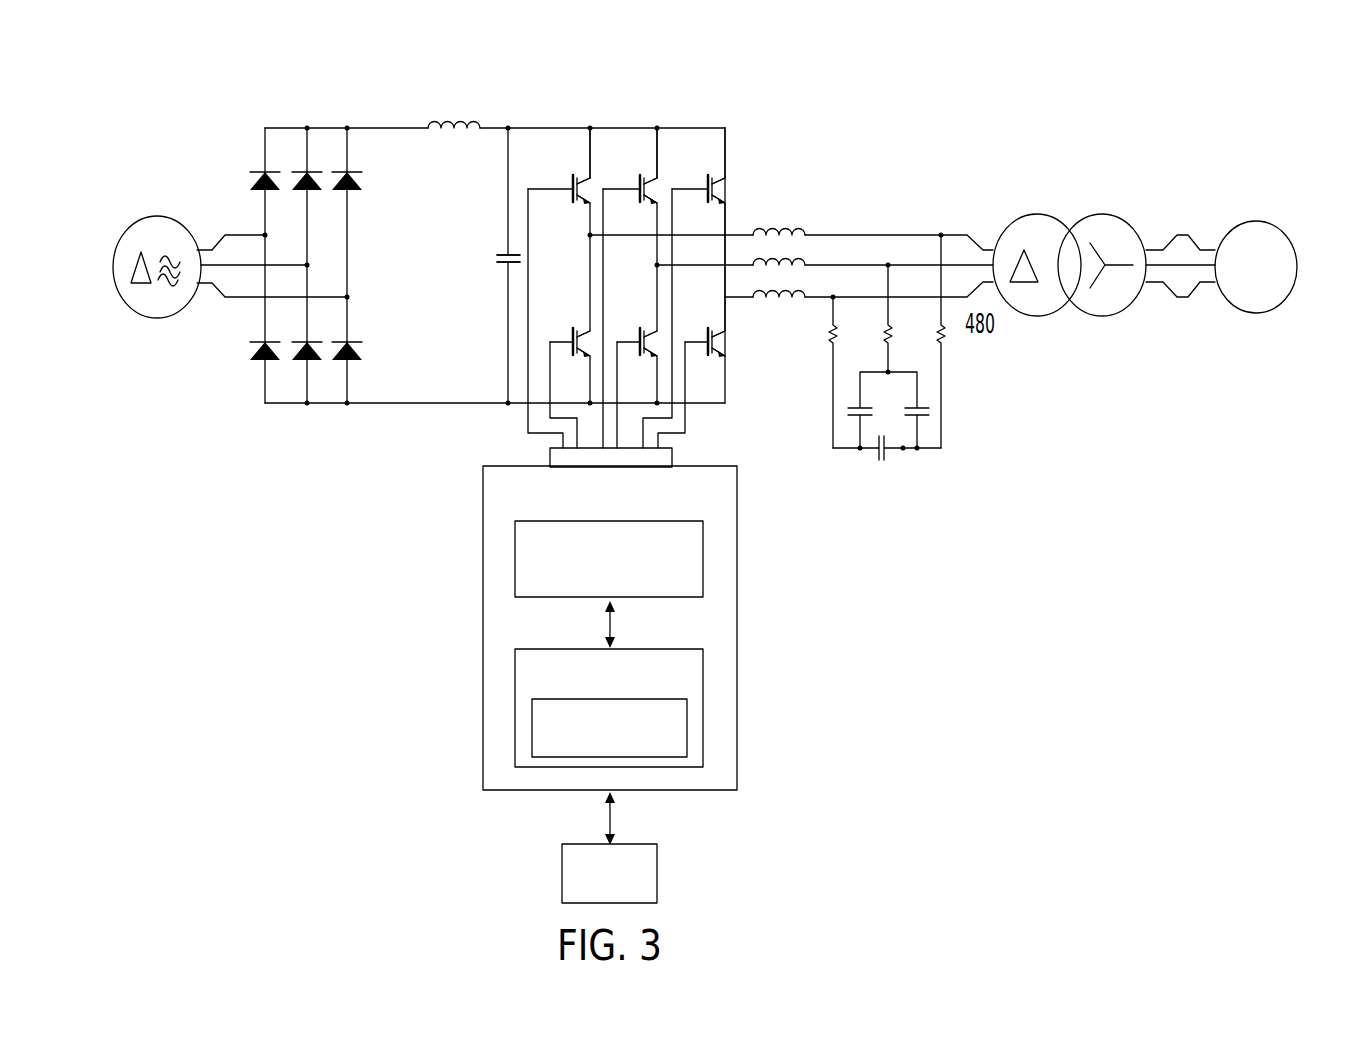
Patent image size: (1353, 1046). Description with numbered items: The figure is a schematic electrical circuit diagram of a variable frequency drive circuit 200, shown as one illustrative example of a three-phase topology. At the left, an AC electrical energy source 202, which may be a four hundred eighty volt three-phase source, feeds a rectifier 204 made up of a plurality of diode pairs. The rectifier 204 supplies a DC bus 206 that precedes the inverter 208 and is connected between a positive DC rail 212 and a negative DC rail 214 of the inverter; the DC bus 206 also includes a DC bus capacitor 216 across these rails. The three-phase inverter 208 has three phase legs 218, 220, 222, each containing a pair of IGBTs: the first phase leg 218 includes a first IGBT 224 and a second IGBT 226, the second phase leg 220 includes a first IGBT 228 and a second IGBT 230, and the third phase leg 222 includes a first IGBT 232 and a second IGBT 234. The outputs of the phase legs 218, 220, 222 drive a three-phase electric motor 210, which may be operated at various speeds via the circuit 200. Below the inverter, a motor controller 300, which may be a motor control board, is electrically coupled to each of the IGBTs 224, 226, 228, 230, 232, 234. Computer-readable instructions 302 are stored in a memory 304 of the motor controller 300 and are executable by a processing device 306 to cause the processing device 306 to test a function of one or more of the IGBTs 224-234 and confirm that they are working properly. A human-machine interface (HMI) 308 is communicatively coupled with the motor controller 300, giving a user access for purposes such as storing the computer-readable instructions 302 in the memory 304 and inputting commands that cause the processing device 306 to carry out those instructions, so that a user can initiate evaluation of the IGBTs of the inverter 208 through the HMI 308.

The variable frequency drive circuit 200 is at (214, 130).
The AC electrical energy source 202 is at (143, 222).
The rectifier 204 is at (248, 382).
The DC bus 206 is at (493, 307).
The inverter 208 is at (746, 123).
The electric motor 210 is at (1252, 222).
The positive DC rail 212 is at (385, 128).
The negative DC rail 214 is at (425, 404).
The DC bus capacitor 216 is at (503, 250).
The first phase leg 218 is at (587, 143).
The second phase leg 220 is at (657, 143).
The third phase leg 222 is at (725, 147).
The first IGBT 224 is at (586, 177).
The second IGBT 226 is at (588, 330).
The first IGBT 228 is at (655, 173).
The second IGBT 230 is at (657, 330).
The first IGBT 232 is at (715, 175).
The second IGBT 234 is at (720, 332).
The motor controller 300 is at (738, 493).
The computer-readable instructions 302 is at (688, 727).
The memory 304 is at (704, 670).
The processing device 306 is at (704, 558).
The human-machine interface (HMI) 308 is at (658, 872).